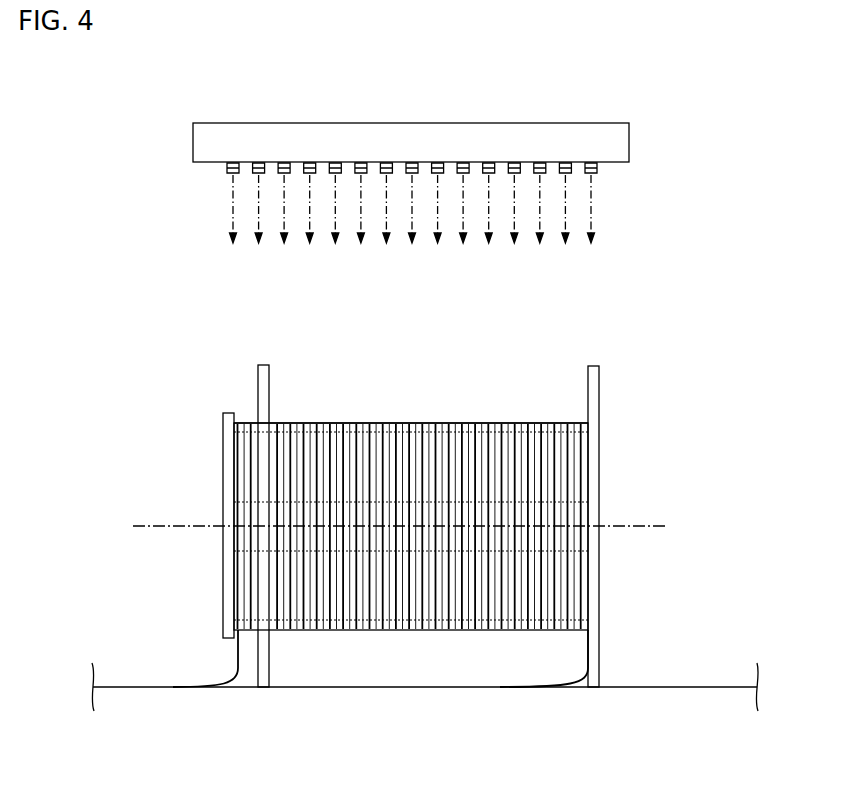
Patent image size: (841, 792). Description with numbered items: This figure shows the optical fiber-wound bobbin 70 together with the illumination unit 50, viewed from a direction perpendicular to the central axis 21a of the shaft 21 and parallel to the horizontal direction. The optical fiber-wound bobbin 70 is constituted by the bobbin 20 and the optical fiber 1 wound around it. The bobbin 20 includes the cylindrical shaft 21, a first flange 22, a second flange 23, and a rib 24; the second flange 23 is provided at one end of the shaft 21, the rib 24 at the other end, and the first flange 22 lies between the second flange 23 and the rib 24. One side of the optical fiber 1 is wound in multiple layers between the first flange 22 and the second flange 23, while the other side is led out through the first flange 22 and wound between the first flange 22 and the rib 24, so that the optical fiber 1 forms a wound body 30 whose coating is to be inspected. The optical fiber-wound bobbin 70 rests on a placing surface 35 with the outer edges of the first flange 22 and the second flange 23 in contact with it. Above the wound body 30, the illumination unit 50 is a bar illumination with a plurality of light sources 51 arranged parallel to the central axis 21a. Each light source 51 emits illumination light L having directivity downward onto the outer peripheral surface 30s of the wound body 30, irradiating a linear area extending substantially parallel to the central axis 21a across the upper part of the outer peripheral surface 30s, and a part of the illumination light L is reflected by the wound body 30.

The illumination unit 50 is at (234, 137).
The light sources 51 is at (231, 177).
The illumination light L is at (231, 197).
The optical fiber-wound bobbin 70 is at (425, 522).
The bobbin 20 is at (382, 486).
The shaft 21 is at (528, 421).
The central axis 21a is at (160, 530).
The first flange 22 is at (272, 655).
The second flange 23 is at (600, 662).
The rib 24 is at (223, 596).
The wound body 30 is at (346, 423).
The outer peripheral surface 30s is at (410, 421).
The optical fiber 1 is at (234, 652).
The placing surface 35 is at (708, 686).